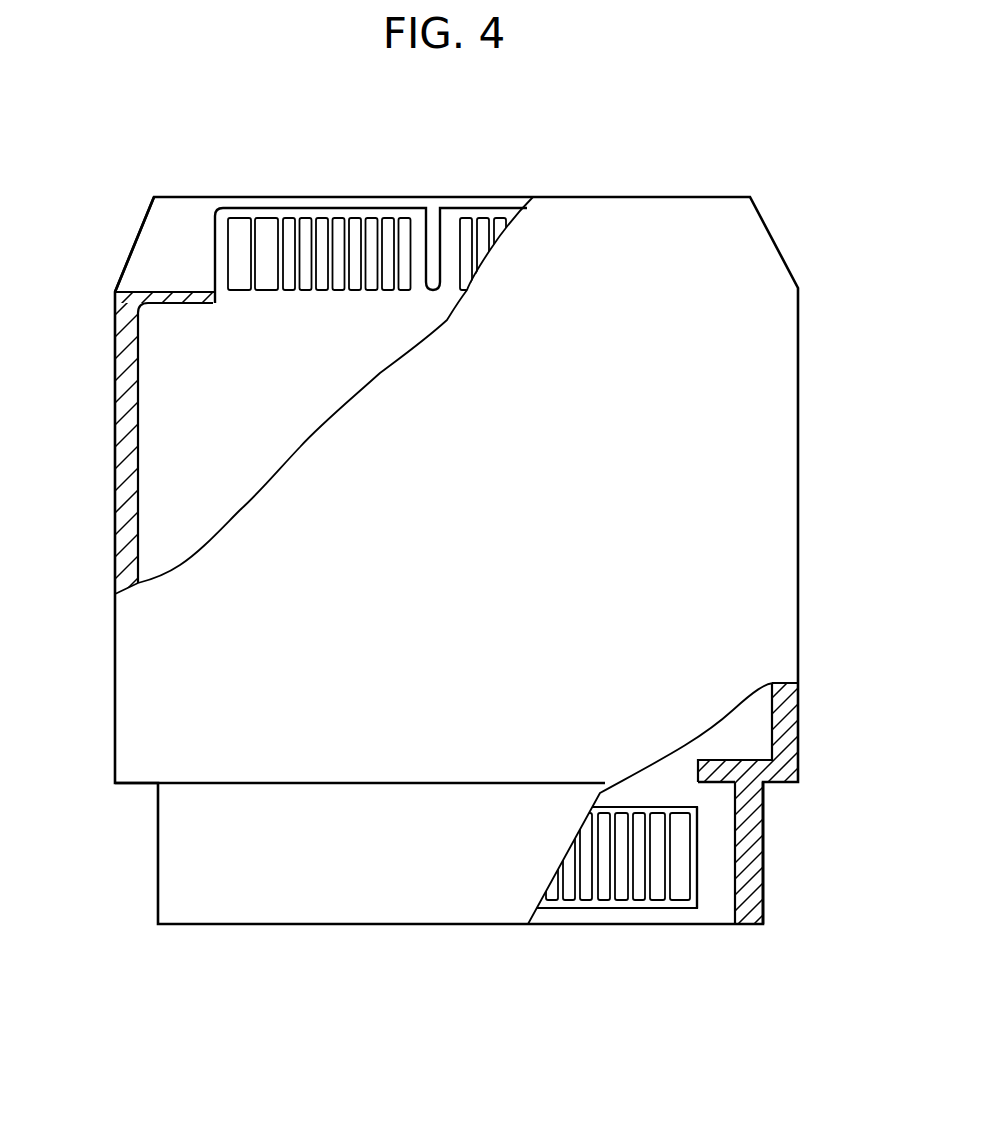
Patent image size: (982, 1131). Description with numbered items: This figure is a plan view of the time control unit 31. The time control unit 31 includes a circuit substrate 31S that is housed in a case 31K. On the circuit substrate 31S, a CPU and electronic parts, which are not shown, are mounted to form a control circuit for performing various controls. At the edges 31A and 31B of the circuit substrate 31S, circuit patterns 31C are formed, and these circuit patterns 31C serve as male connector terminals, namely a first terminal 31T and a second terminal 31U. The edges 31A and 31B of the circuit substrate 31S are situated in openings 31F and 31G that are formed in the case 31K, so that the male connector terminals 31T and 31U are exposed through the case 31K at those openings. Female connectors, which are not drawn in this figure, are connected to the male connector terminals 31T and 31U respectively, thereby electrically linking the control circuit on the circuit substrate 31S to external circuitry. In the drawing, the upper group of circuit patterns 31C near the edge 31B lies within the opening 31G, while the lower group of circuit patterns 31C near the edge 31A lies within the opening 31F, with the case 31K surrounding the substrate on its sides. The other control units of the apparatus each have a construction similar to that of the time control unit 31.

The time control unit 31 is at (804, 342).
The edge 31A is at (703, 870).
The edge 31B is at (213, 248).
The circuit patterns 31C is at (404, 215).
The opening 31F is at (718, 842).
The opening 31G is at (202, 272).
The case 31K is at (800, 548).
The circuit substrate 31S is at (180, 470).
The male connector terminal 31T is at (645, 796).
The male connector terminal 31U is at (393, 314).